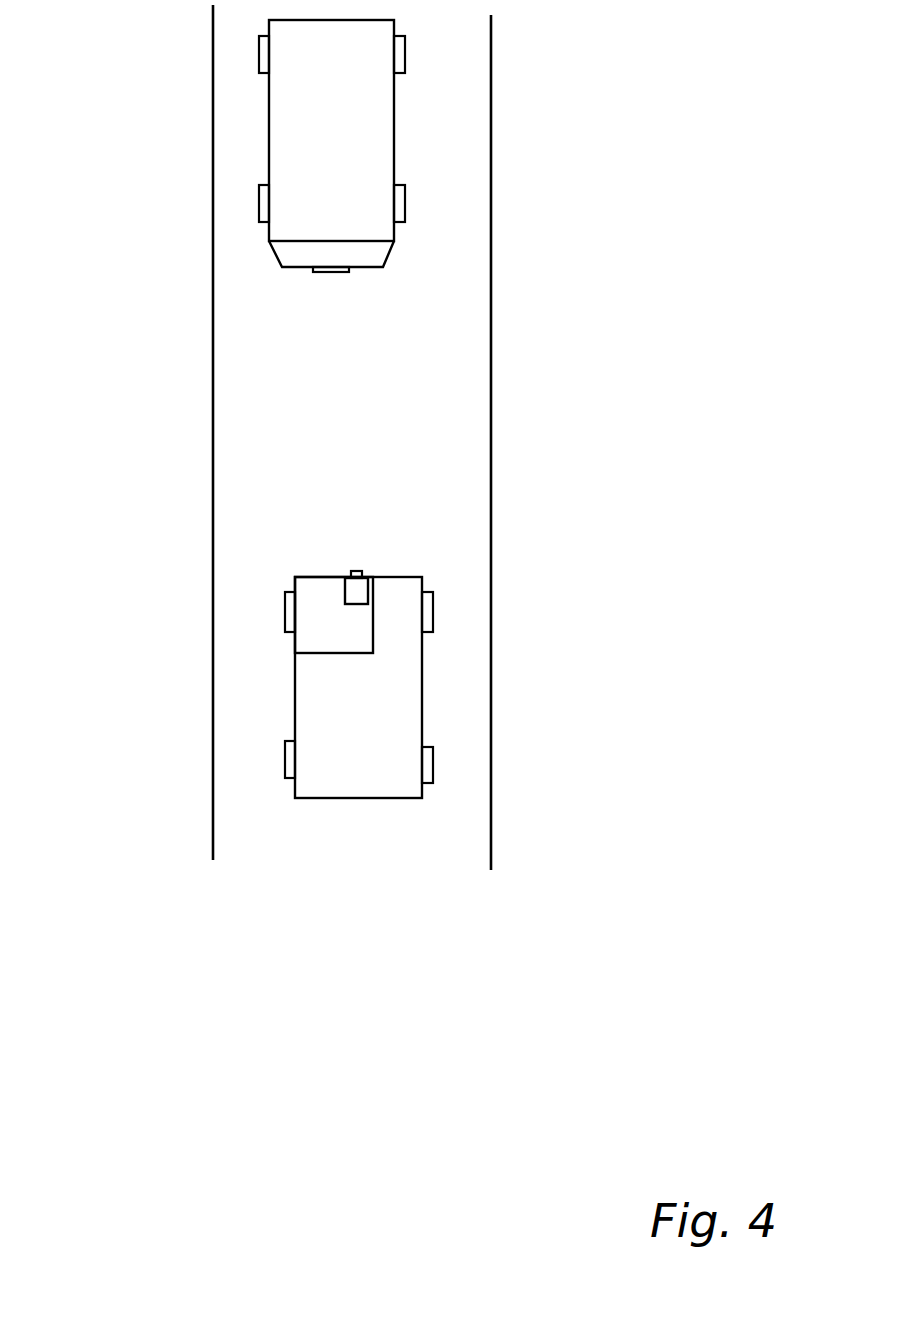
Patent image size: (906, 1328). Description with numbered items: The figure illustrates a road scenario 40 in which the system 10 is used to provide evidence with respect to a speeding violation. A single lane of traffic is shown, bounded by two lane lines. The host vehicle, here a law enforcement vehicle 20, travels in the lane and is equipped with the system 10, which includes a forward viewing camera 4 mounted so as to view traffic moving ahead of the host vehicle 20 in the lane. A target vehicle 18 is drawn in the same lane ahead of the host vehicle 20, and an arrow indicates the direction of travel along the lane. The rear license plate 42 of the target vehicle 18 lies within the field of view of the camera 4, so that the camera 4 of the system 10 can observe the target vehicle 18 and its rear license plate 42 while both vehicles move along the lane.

The forward viewing camera 4 is at (356, 588).
The system 10 is at (334, 615).
The target vehicle 18 is at (395, 113).
The law enforcement vehicle 20 is at (423, 676).
The road scenario 40 is at (135, 848).
The rear license plate 42 is at (345, 273).